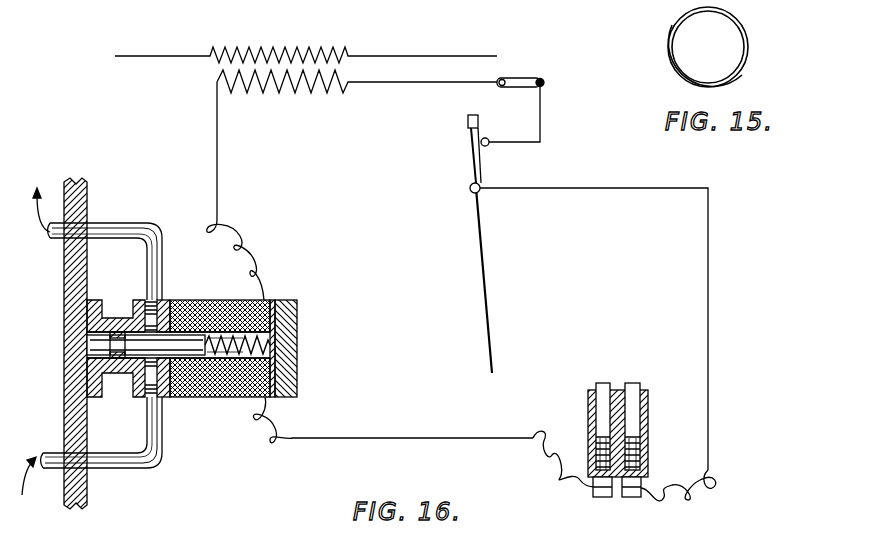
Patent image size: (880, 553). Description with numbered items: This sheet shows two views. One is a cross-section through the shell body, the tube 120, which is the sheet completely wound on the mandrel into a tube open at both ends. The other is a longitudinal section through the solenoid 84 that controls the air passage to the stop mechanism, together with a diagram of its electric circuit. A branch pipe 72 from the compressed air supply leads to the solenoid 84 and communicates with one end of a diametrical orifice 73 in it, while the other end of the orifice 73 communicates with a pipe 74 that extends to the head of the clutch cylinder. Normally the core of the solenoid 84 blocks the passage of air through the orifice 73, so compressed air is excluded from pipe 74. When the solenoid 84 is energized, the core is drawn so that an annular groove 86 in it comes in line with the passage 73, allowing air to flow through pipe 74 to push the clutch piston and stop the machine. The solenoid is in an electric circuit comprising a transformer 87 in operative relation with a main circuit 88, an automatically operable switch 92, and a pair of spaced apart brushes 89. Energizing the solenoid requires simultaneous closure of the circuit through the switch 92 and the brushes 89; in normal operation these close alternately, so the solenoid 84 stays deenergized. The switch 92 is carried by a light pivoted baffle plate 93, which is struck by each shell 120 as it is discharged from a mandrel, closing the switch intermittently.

In FIG. 16, the branch pipe 72 is at (132, 468).
In FIG. 16, the diametrical orifice 73 is at (152, 327).
In FIG. 16, the pipe 74 is at (119, 223).
In FIG. 16, the solenoid 84 is at (188, 398).
In FIG. 16, the annular groove 86 is at (118, 362).
In FIG. 16, the transformer 87 is at (375, 256).
In FIG. 16, the main circuit 88 is at (306, 49).
In FIG. 16, the brushes 89 is at (631, 383).
In FIG. 16, the automatically operable switch 92 is at (482, 163).
In FIG. 16, the baffle plate 93 is at (487, 290).
In FIG. 15, the tube 120 is at (745, 22).